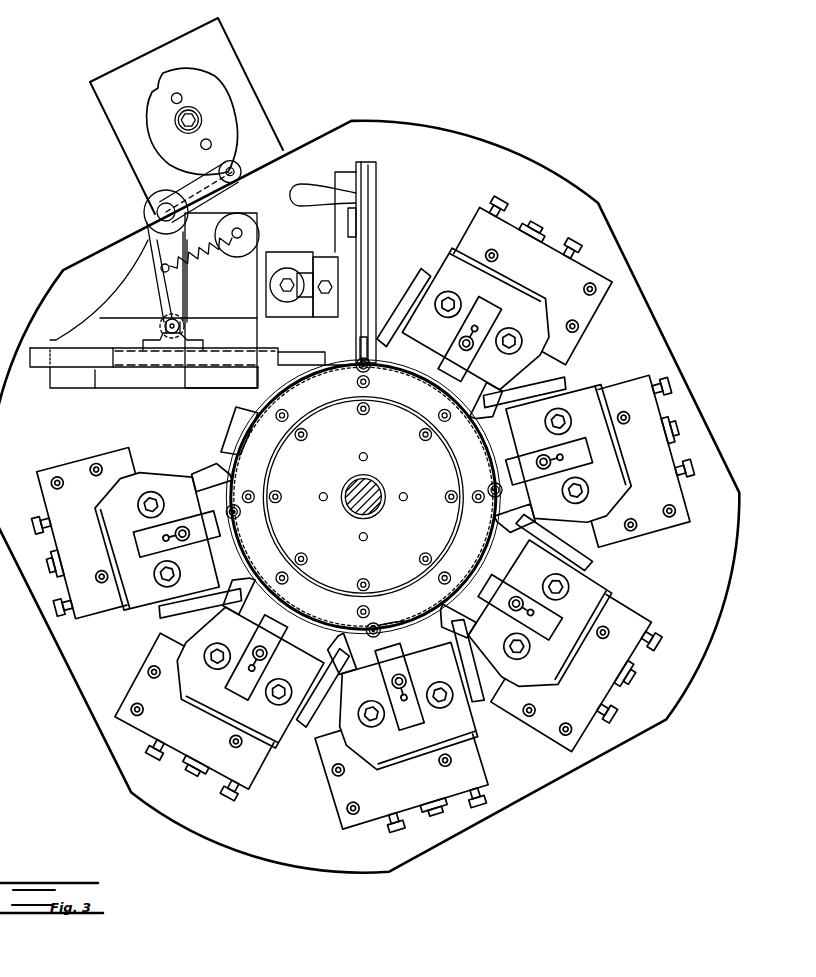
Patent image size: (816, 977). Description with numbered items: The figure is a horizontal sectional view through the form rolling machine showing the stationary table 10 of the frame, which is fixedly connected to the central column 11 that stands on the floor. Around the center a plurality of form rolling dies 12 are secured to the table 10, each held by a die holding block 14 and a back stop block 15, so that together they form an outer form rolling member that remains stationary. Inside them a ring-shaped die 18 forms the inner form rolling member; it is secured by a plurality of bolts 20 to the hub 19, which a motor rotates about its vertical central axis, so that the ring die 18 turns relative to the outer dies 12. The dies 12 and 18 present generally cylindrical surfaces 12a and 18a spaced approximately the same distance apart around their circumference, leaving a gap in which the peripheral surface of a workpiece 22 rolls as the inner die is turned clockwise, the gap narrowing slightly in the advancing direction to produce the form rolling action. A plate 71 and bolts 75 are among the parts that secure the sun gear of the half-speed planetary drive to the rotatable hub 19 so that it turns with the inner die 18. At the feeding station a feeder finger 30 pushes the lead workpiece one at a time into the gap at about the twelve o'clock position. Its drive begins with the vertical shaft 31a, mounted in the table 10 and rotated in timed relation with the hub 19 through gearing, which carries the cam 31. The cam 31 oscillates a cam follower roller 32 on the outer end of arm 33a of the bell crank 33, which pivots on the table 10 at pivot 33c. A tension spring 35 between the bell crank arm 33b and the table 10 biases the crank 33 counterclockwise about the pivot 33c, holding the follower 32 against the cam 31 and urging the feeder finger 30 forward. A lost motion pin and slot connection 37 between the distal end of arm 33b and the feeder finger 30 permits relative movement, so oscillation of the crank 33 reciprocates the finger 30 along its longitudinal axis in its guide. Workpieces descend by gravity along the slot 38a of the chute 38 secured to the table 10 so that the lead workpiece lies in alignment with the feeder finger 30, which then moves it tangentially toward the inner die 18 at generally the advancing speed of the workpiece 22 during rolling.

The table 10 is at (240, 50).
The central column 11 is at (378, 484).
The form rolling dies 12 is at (363, 498).
The cylindrical surface 12a is at (405, 625).
The die holding block 14 is at (363, 510).
The back stop block 15 is at (363, 519).
The ring-shaped die 18 is at (363, 496).
The cylindrical surface 18a is at (395, 628).
The hub 19 is at (452, 518).
The bolts 20 is at (438, 412).
The workpiece 22 is at (240, 513).
The feeder finger 30 is at (330, 362).
The cam 31 is at (236, 103).
The vertical shaft 31a is at (201, 120).
The cam follower roller 32 is at (243, 172).
The bell crank 33 is at (153, 293).
The arm of bell crank 33a is at (232, 190).
The bell crank arm 33b is at (186, 283).
The pivot 33c is at (157, 212).
The tension spring 35 is at (205, 266).
The lost motion pin and slot connection 37 is at (180, 328).
The chute 38 is at (376, 228).
The slot 38a is at (360, 345).
The plate 71 is at (363, 497).
The bolts 75 is at (308, 435).